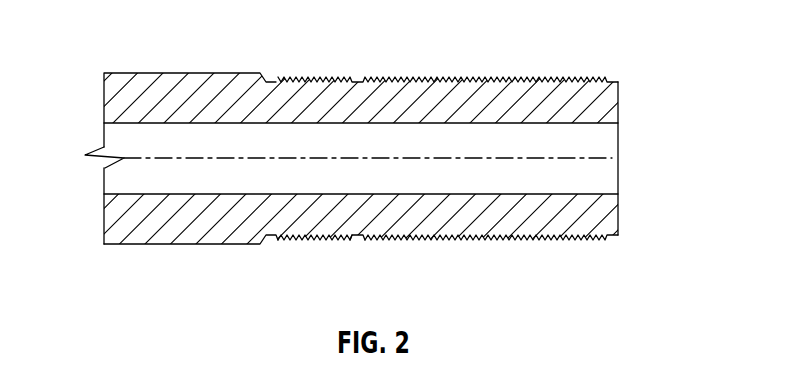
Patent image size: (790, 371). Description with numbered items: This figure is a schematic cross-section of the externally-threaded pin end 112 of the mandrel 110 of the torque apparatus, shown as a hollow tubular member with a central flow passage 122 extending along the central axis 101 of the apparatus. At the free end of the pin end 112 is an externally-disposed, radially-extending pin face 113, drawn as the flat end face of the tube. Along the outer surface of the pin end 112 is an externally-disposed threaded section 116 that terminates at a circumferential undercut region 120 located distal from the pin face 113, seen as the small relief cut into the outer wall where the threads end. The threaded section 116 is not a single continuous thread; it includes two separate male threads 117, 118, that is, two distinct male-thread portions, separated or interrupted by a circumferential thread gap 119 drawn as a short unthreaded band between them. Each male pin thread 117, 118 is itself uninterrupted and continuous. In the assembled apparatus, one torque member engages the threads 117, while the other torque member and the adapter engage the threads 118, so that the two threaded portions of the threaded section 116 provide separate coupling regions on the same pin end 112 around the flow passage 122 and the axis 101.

The central axis 101 is at (121, 156).
The mandrel 110 is at (126, 77).
The externally-threaded pin end 112 is at (233, 92).
The pin face 113 is at (630, 102).
The threaded section 116 is at (601, 70).
The male thread 117 is at (325, 241).
The male thread 118 is at (522, 238).
The circumferential thread gap 119 is at (360, 237).
The circumferential undercut region 120 is at (272, 238).
The central flow passage 122 is at (606, 152).